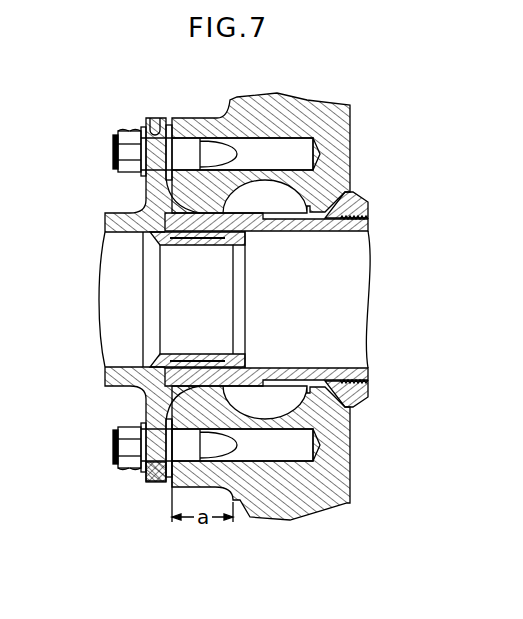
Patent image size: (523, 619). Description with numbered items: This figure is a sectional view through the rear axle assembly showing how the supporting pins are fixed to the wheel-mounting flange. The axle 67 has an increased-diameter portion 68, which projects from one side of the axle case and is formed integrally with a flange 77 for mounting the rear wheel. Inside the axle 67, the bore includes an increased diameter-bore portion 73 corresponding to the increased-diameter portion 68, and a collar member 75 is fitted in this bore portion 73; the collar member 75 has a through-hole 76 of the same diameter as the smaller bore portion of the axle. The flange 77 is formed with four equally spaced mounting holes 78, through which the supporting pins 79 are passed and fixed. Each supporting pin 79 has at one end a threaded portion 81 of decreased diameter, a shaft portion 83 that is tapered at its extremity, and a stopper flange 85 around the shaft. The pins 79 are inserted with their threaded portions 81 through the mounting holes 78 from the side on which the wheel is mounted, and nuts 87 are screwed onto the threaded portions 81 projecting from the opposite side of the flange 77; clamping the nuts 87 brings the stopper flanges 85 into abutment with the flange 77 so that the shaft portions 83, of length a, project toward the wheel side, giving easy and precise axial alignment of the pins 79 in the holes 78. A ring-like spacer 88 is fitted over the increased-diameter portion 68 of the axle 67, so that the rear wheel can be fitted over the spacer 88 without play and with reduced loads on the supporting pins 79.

The axle 67 is at (372, 250).
The increased-diameter portion 68 is at (120, 376).
The increased diameter-bore portion 73 is at (120, 233).
The collar member 75 is at (157, 355).
The through-hole 76 is at (187, 244).
The flange 77 is at (153, 125).
The mounting holes 78 is at (160, 130).
The supporting pins 79 is at (228, 131).
The threaded portions 81 is at (183, 148).
The shaft portions 83 is at (117, 152).
The stopper flanges 85 is at (166, 174).
The nuts 87 is at (128, 134).
The ring-like spacer 88 is at (262, 400).